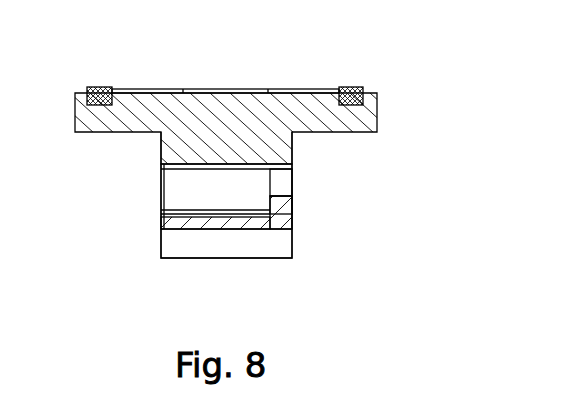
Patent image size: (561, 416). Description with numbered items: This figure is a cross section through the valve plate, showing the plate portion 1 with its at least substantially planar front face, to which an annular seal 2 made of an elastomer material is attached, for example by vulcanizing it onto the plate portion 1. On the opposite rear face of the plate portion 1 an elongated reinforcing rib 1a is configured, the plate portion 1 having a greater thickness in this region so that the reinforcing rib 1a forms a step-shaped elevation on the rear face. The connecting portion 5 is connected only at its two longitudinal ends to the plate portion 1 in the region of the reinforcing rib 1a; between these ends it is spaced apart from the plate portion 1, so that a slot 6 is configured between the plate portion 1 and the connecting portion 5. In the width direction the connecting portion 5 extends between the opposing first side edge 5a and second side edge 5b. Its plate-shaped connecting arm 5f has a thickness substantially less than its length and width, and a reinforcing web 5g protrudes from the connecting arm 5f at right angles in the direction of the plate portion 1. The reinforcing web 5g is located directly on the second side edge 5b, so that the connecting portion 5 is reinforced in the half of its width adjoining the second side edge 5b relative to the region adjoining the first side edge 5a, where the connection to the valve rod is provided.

The plate portion 1 is at (382, 90).
The reinforcing rib 1a is at (167, 143).
The annular seal 2 is at (99, 98).
The connecting portion 5 is at (145, 218).
The first side edge 5a is at (161, 222).
The second side edge 5b is at (290, 222).
The connecting arm 5f is at (218, 228).
The reinforcing web 5g is at (280, 201).
The slot 6 is at (283, 186).